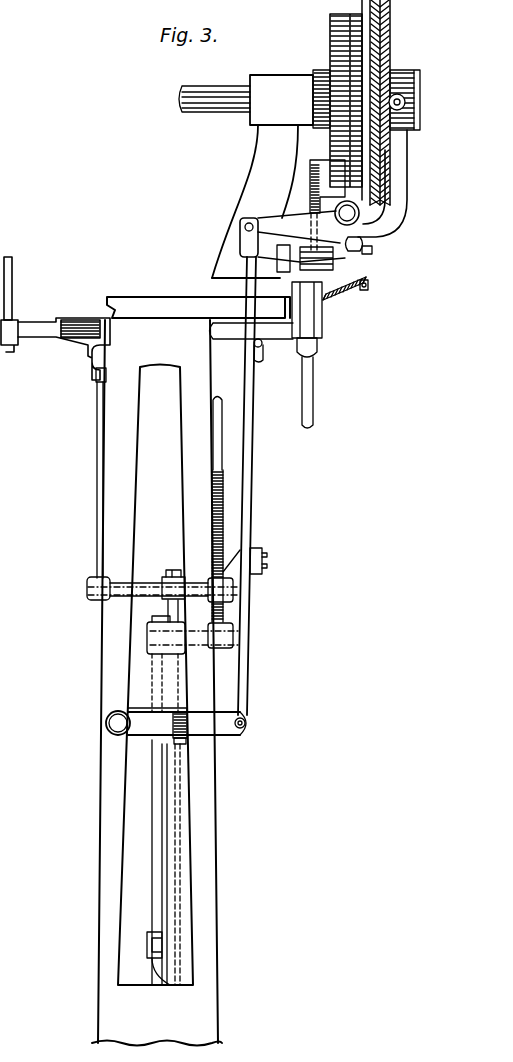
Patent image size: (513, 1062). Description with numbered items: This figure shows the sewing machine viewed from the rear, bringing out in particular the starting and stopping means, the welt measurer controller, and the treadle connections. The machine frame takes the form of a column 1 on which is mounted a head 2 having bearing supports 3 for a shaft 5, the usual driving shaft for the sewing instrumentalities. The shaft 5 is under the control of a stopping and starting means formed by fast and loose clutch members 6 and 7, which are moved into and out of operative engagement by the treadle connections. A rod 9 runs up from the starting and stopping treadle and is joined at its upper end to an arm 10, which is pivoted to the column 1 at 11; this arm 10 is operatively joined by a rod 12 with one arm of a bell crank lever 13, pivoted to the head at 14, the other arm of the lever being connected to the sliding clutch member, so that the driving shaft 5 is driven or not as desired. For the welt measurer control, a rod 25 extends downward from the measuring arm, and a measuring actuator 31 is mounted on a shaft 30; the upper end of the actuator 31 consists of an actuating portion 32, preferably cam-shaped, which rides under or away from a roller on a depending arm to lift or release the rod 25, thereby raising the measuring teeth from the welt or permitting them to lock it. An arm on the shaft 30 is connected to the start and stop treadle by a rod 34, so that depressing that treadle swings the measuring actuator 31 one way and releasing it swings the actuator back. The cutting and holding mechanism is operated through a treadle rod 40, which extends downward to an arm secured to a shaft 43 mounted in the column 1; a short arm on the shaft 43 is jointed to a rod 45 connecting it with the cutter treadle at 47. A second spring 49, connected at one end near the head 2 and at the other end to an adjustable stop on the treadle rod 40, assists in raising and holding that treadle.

The column 1 is at (206, 833).
The head 2 is at (166, 297).
The bearing supports 3 is at (252, 192).
The shaft 5 is at (216, 106).
The fast clutch member 6 is at (340, 16).
The loose clutch member 7 is at (385, 24).
The rod 9 is at (180, 872).
The arm 10 is at (220, 735).
The pivot 11 is at (110, 722).
The rod 12 is at (246, 642).
The bell crank lever 13 is at (378, 240).
The pivot 14 is at (368, 247).
The rod 25 is at (12, 271).
The shaft 30 is at (150, 585).
The measuring actuator 31 is at (97, 406).
The actuating portion 32 is at (96, 377).
The rod 34 is at (168, 765).
The treadle rod 40 is at (222, 438).
The shaft 43 is at (148, 636).
The rod 45 is at (152, 812).
The connection 47 is at (147, 947).
The second spring 49 is at (225, 507).